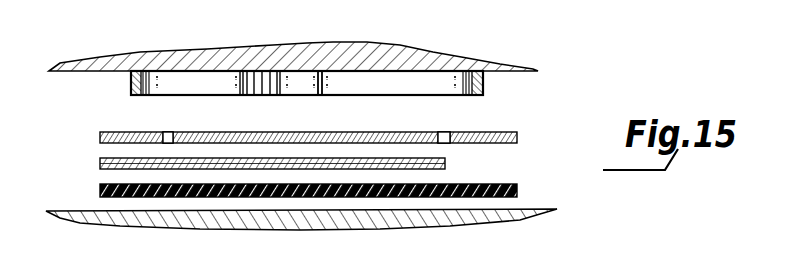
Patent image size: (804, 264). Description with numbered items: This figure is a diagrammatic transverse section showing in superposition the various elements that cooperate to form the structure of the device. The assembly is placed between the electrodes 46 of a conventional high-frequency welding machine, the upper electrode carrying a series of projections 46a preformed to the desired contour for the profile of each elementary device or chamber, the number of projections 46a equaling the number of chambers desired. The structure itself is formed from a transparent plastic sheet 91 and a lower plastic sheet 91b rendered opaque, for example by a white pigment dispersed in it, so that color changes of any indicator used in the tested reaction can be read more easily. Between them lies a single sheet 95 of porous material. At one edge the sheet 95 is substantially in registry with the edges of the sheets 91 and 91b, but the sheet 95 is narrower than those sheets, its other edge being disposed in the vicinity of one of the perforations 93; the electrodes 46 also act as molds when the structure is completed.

The electrodes 46 is at (294, 50).
The projections 46a is at (484, 82).
The perforations 93 is at (170, 132).
The transparent plastic sheet 91 is at (300, 132).
The sheet of porous material 95 is at (100, 163).
The opaque plastic sheet 91b is at (517, 190).